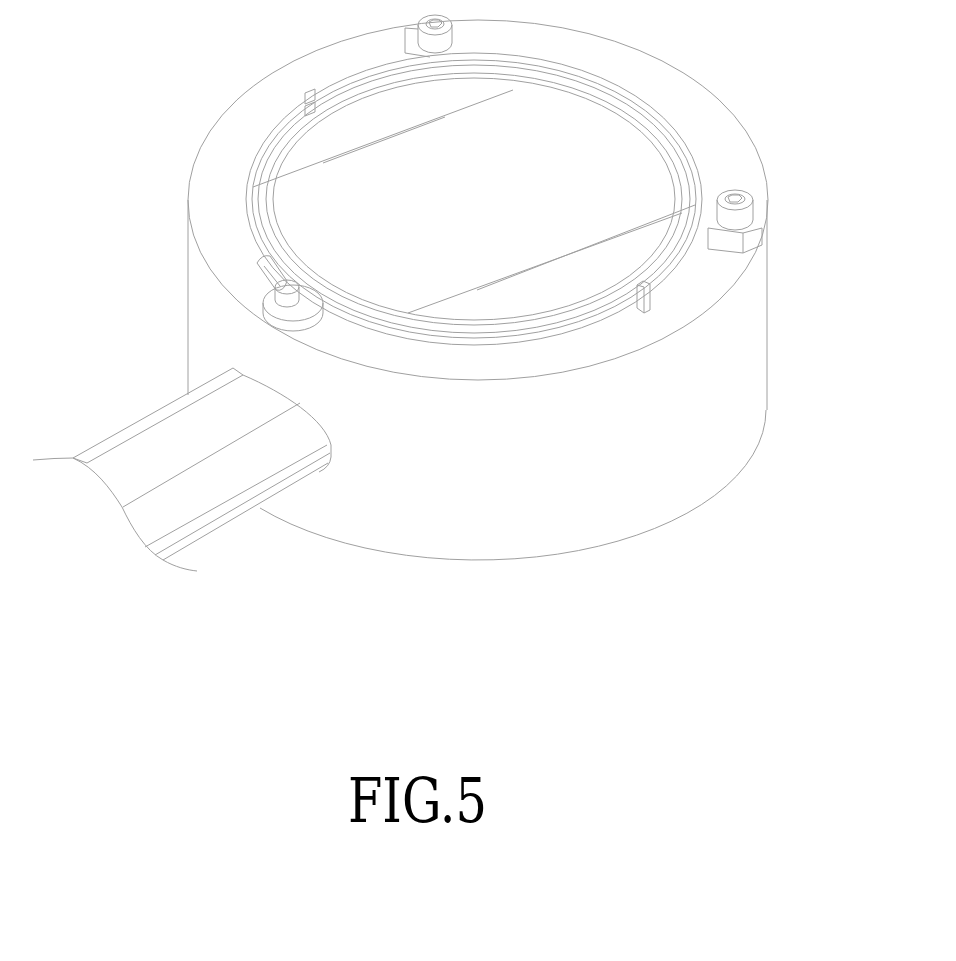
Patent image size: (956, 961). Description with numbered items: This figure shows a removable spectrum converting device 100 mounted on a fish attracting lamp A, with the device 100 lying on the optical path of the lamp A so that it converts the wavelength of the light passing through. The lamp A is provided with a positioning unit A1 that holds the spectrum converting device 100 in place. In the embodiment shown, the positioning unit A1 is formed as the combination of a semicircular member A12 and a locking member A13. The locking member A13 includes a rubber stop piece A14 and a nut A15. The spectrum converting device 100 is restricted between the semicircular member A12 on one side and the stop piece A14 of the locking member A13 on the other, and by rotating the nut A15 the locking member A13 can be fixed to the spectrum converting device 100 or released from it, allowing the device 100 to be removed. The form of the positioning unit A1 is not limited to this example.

The spectrum converting device 100 is at (268, 120).
The lamp A is at (788, 312).
The positioning unit A1 is at (495, 633).
The semicircular member A12 is at (697, 113).
The locking member A13 is at (315, 328).
The rubber stop piece A14 is at (272, 307).
The nut A15 is at (290, 293).